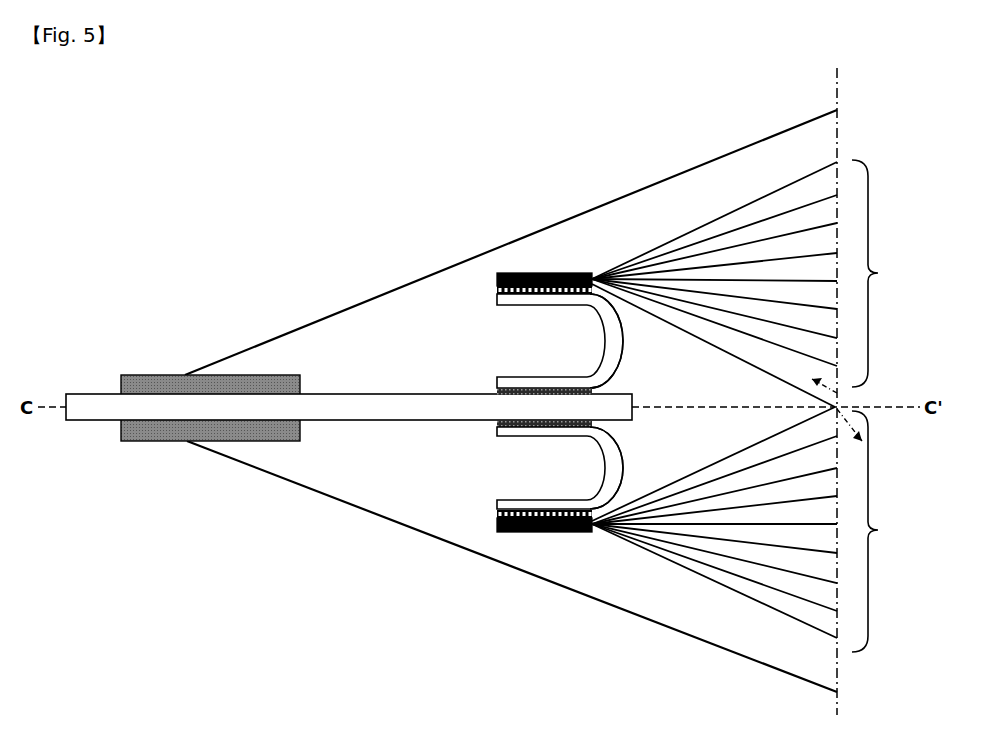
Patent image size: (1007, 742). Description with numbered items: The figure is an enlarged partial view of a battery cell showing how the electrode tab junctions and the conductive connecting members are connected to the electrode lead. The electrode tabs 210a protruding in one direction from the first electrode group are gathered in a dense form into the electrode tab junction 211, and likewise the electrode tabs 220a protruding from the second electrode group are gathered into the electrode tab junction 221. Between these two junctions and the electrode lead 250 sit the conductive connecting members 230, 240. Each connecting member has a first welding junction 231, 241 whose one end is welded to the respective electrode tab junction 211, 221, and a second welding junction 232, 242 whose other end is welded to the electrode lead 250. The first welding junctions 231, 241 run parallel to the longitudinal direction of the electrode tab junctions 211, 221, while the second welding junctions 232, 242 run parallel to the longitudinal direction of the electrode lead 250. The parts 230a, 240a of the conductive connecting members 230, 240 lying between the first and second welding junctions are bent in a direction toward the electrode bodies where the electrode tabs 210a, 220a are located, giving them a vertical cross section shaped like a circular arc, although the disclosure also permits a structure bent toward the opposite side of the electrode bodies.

The electrode tab junction 211 is at (523, 280).
The electrode tab junction 221 is at (522, 522).
The first welding junction 231 is at (499, 292).
The second welding junction 232 is at (497, 389).
The first welding junction 241 is at (499, 514).
The second welding junction 242 is at (497, 424).
The conductive connecting member 230 is at (602, 343).
The part of the conductive connecting member 230a is at (620, 338).
The conductive connecting member 240 is at (602, 470).
The part of the conductive connecting member 240a is at (620, 467).
The electrode tabs 210a is at (764, 273).
The electrode tabs 220a is at (766, 531).
The electrode lead 250 is at (99, 410).